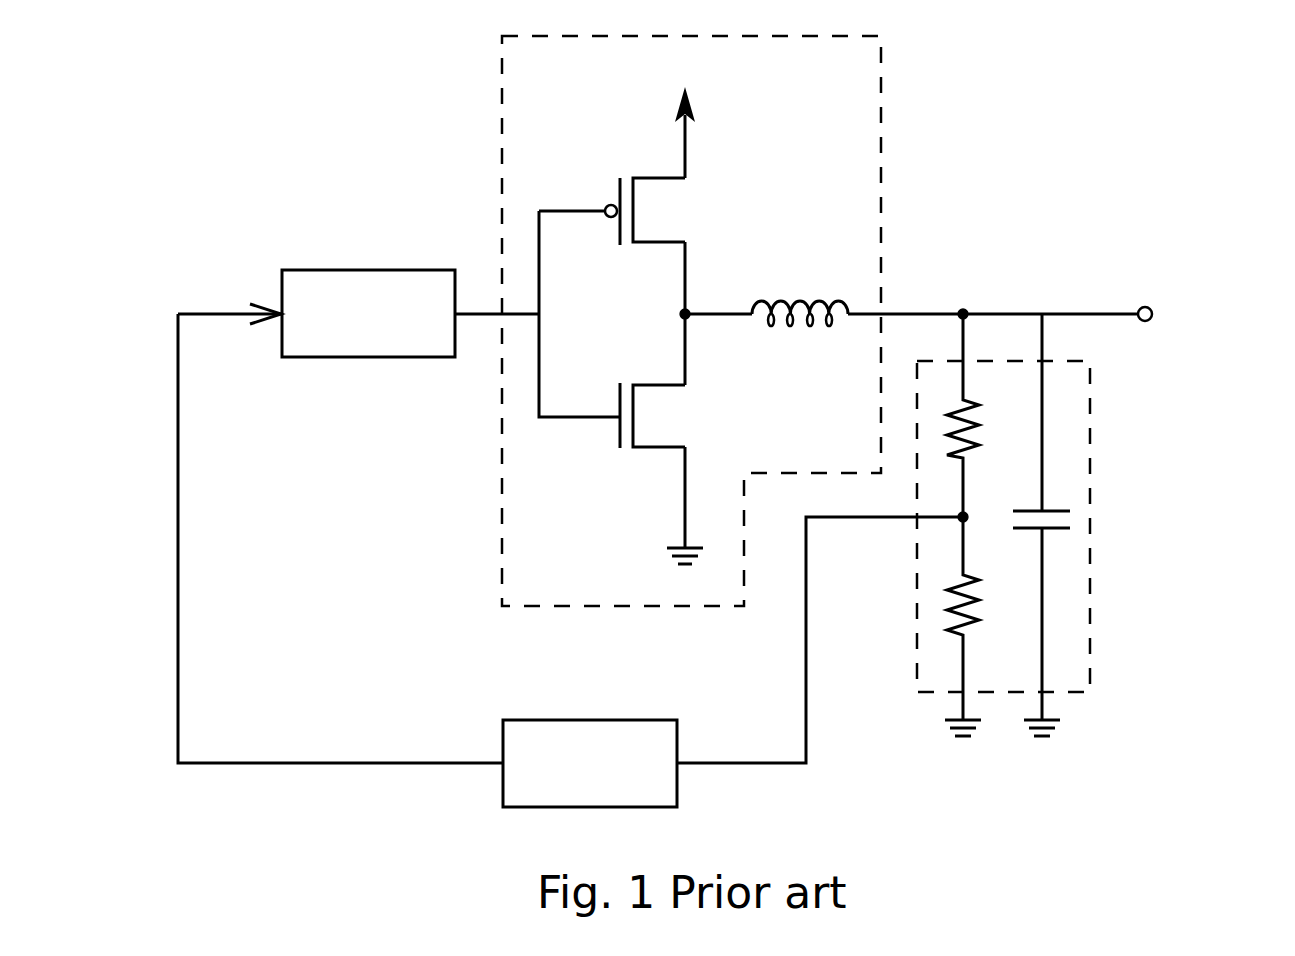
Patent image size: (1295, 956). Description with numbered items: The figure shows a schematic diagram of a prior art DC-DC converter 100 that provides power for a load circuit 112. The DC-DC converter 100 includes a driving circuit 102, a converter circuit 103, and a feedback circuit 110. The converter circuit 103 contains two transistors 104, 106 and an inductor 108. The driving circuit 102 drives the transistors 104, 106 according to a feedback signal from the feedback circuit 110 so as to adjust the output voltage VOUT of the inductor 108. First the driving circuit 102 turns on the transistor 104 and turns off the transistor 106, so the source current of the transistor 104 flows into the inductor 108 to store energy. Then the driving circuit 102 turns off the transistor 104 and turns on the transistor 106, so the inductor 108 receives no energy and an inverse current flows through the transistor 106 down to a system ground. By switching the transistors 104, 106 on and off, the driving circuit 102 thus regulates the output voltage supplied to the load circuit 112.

The DC-DC converter 100 is at (1058, 128).
The driving circuit 102 is at (297, 270).
The converter circuit 103 is at (880, 157).
The transistor 104 is at (677, 213).
The transistor 106 is at (677, 415).
The inductor 108 is at (818, 300).
The feedback circuit 110 is at (516, 720).
The load circuit 112 is at (1090, 563).